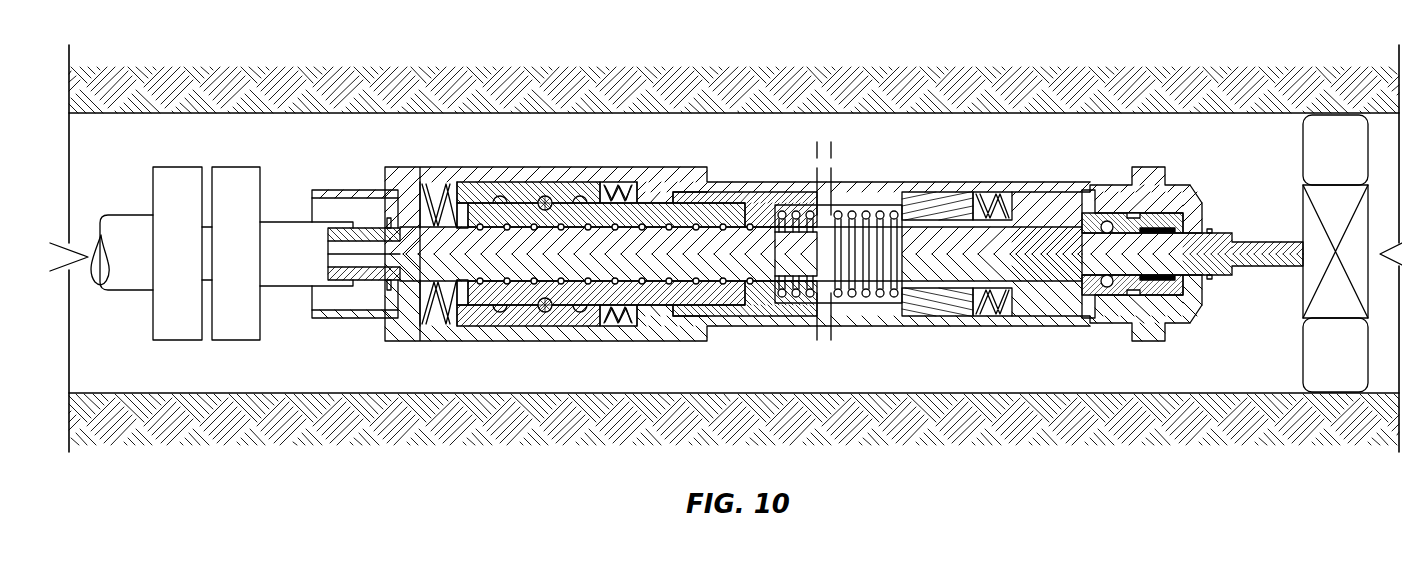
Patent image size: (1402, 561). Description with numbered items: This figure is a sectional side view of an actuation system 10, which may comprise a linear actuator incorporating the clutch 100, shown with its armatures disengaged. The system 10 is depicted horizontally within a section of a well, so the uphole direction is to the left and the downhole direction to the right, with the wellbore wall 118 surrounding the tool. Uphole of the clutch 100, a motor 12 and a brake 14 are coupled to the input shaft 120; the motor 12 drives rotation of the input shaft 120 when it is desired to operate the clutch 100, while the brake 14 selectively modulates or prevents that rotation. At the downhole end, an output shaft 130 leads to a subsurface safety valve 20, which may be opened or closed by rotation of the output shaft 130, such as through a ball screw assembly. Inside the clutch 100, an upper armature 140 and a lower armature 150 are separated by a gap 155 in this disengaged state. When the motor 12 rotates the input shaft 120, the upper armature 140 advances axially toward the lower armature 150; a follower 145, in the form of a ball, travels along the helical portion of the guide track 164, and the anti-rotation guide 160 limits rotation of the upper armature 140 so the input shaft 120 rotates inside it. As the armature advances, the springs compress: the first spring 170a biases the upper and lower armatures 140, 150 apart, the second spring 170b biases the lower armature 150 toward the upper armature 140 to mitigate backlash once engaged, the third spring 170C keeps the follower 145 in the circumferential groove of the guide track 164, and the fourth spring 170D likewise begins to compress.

The actuation system 10 is at (1282, 56).
The motor 12 is at (235, 172).
The brake 14 is at (175, 172).
The subsurface safety valve 20 is at (1312, 288).
The clutch 100 is at (1020, 159).
The wellbore wall / casing 118 is at (673, 113).
The input shaft 120 is at (333, 210).
The output shaft 130 is at (1253, 248).
The upper armature 140 is at (768, 202).
The follower 145 is at (545, 198).
The lower armature 150 is at (953, 197).
The gap 155 is at (832, 153).
The anti-rotation guide 160 is at (475, 188).
The guide track 164 is at (582, 207).
The first spring 170a is at (840, 295).
The second spring 170b is at (997, 323).
The third spring 170C is at (622, 318).
The fourth spring 170D is at (442, 318).